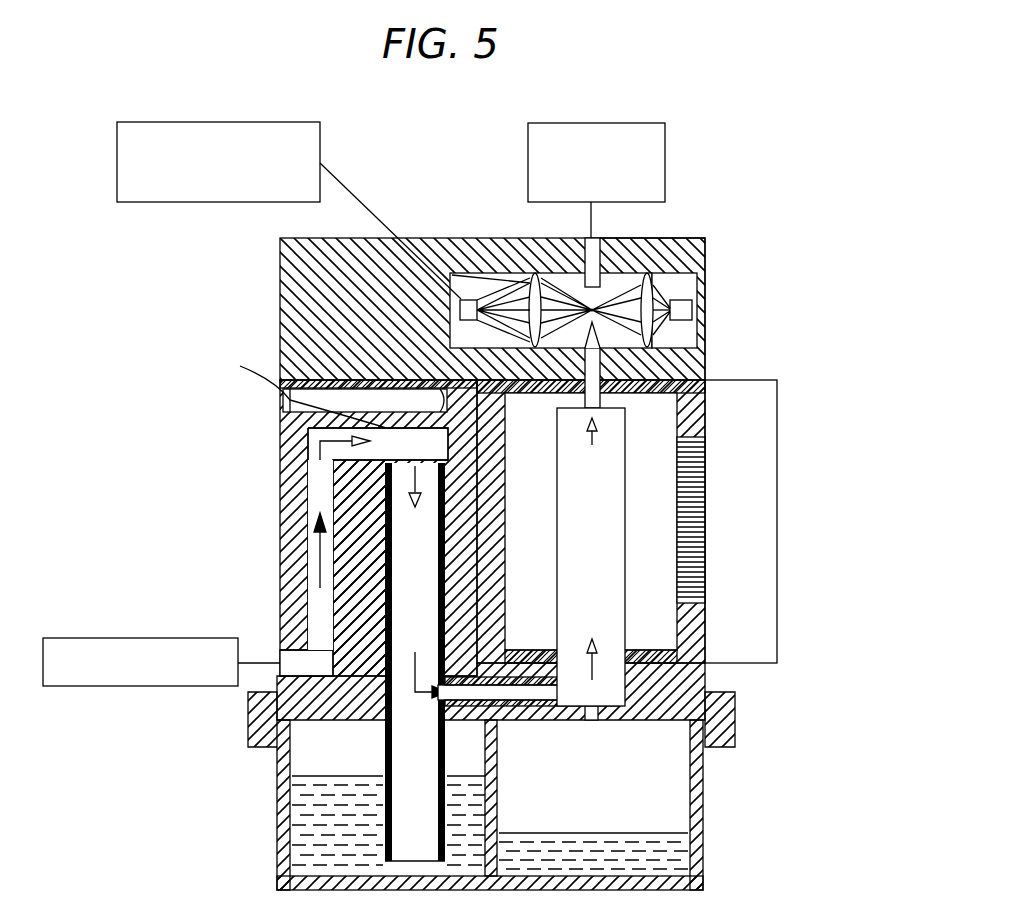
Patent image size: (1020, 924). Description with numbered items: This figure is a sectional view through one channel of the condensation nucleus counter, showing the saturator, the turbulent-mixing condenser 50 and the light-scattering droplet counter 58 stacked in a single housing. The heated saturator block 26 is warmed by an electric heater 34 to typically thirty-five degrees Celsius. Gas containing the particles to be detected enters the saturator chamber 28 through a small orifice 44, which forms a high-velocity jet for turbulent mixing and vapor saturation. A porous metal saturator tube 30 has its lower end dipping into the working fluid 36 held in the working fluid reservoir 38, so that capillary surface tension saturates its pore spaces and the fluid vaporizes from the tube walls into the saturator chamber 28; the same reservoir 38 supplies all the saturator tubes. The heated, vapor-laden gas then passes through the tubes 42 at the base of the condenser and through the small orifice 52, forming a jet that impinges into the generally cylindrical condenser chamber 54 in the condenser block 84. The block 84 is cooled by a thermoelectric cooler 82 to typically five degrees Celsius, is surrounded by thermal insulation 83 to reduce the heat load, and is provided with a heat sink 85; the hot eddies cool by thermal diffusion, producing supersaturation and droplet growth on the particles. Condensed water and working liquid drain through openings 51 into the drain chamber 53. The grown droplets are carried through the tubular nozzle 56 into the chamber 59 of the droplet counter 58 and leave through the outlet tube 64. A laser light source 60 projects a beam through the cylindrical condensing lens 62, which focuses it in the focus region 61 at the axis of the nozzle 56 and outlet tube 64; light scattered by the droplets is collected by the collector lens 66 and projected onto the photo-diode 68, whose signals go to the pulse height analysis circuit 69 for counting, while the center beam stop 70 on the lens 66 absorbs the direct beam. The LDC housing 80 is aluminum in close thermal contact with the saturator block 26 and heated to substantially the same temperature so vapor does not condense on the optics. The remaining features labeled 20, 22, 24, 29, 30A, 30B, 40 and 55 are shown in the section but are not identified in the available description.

The particle counter apparatus 20 is at (262, 327).
The aerosol source 22 is at (147, 688).
The inlet passage 24 is at (312, 546).
The saturator block 26 is at (282, 449).
The saturator chamber 28 is at (405, 585).
The exhaust pump 29 is at (528, 162).
The saturator tube 30 is at (386, 505).
The tube lower end 30A is at (413, 832).
The lateral passage 30B is at (486, 698).
The electric heater 34 is at (309, 402).
The working fluid 36 is at (310, 843).
The working fluid reservoir 38 is at (286, 850).
The reservoir air space 40 is at (420, 718).
The tubes 42 is at (450, 740).
The small orifice 44 is at (262, 398).
The turbulent-mixing condenser 50 is at (663, 555).
The openings 51 is at (590, 724).
The small orifice 52 is at (589, 668).
The drain chamber 53 is at (692, 796).
The condenser chamber 54 is at (613, 562).
The collected liquid 55 is at (662, 859).
The tubular nozzle 56 is at (598, 376).
The light-scattering droplet counter 58 is at (663, 238).
The chamber 59 is at (686, 283).
The laser light source 60 is at (683, 310).
The focus region 61 is at (593, 306).
The condensing lens 62 is at (652, 275).
The outlet tube 64 is at (598, 238).
The collector lens 66 is at (530, 282).
The photo-diode 68 is at (458, 275).
The pulse height analysis circuit 69 is at (182, 205).
The center beam stop 70 is at (557, 263).
The LDC housing 80 is at (280, 268).
The thermoelectric cooler 82 is at (690, 510).
The thermal insulation 83 is at (703, 382).
The condenser block 84 is at (655, 422).
The heat sink 85 is at (761, 650).